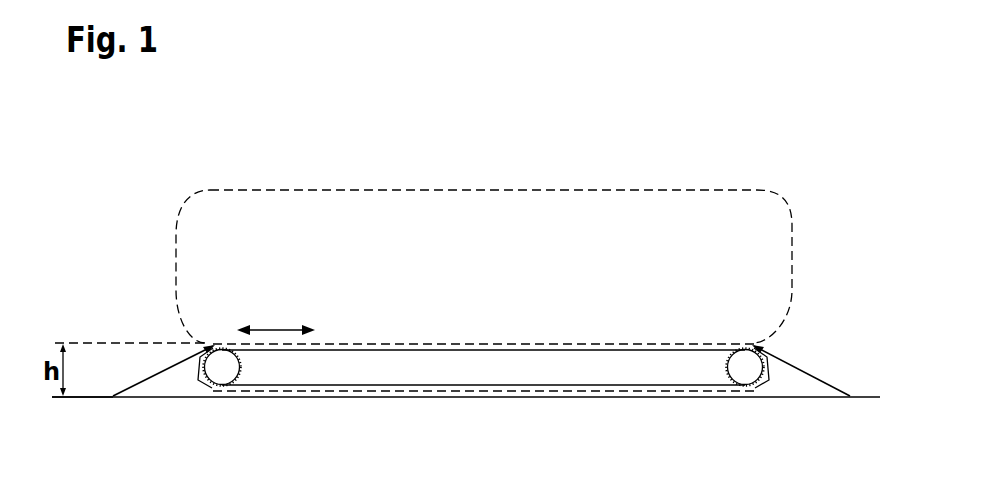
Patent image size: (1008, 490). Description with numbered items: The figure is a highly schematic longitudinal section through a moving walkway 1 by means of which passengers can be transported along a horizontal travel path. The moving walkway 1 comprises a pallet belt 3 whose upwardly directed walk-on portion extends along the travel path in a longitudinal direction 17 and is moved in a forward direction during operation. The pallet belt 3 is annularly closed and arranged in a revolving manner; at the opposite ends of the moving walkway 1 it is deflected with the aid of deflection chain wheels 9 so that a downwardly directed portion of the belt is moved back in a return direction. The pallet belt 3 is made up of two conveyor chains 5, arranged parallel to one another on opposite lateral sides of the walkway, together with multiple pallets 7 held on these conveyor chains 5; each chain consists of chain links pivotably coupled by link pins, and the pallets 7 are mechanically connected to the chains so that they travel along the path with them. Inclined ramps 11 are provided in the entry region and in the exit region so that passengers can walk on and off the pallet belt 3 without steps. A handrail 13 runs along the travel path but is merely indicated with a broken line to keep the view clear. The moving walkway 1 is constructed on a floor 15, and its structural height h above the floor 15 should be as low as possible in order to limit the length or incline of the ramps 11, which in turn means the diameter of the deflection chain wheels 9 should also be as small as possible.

The moving walkway 1 is at (222, 148).
The pallet belt 3 is at (374, 320).
The conveyor chains 5 is at (513, 348).
The pallets 7 is at (438, 346).
The deflection chain wheels 9 is at (222, 368).
The inclined ramps 11 is at (167, 372).
The handrail 13 is at (613, 190).
The floor 15 is at (97, 395).
The longitudinal direction 17 is at (278, 328).